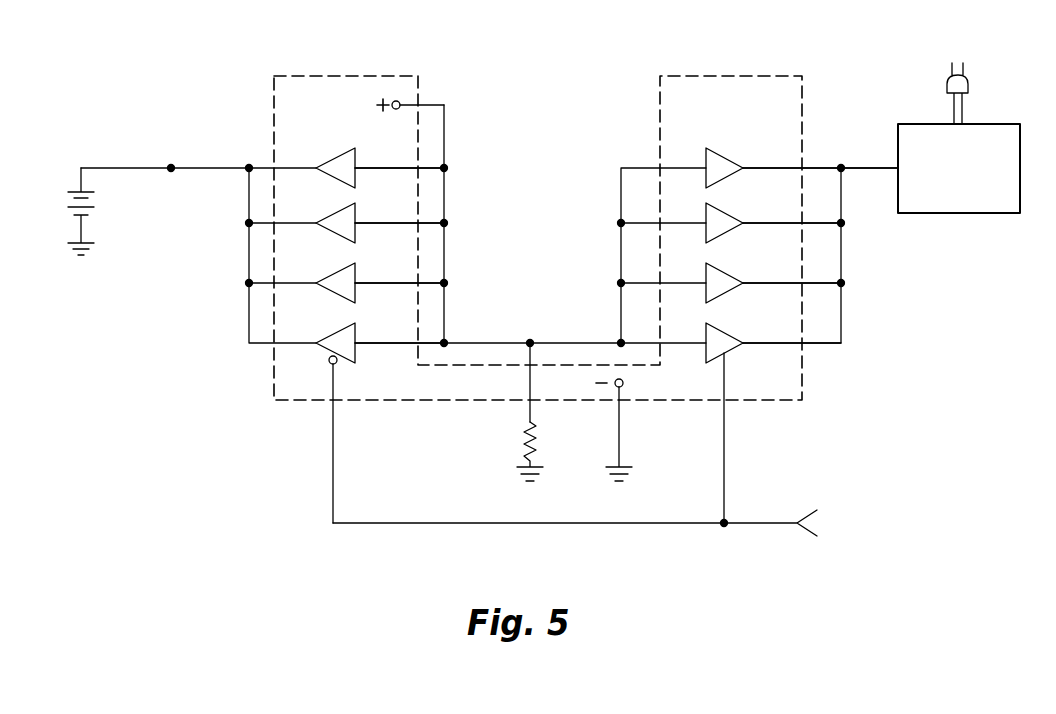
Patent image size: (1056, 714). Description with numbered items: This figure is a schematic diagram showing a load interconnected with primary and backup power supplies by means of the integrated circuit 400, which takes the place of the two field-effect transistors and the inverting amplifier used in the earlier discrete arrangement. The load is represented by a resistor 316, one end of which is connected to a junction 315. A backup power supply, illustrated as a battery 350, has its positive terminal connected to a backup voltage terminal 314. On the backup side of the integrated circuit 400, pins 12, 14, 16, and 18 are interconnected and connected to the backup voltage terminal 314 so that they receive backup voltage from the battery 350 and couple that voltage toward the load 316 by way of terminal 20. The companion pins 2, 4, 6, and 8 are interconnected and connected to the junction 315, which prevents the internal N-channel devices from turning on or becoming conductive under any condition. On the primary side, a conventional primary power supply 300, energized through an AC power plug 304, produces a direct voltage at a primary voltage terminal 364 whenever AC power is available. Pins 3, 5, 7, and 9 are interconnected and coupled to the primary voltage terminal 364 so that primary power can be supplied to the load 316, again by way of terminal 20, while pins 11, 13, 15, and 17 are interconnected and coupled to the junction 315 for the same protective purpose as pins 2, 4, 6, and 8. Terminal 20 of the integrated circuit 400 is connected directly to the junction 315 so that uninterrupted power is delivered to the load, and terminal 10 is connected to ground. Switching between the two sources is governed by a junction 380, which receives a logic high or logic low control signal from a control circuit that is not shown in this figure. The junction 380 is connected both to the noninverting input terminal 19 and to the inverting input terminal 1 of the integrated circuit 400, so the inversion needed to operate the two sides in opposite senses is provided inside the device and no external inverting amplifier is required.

The inverting input terminal 1 is at (327, 439).
The pin 2 is at (399, 156).
The pin 3 is at (792, 331).
The pin 4 is at (399, 211).
The pin 5 is at (792, 271).
The pin 6 is at (399, 271).
The pin 7 is at (792, 211).
The pin 8 is at (399, 331).
The pin 9 is at (792, 156).
The terminal 10 is at (624, 428).
The pin 11 is at (708, 166).
The pin 12 is at (322, 341).
The pin 13 is at (708, 221).
The pin 14 is at (322, 281).
The pin 15 is at (708, 281).
The pin 16 is at (322, 221).
The pin 17 is at (708, 341).
The pin 18 is at (322, 166).
The noninverting input terminal 19 is at (739, 438).
The terminal 20 is at (410, 94).
The primary power supply 300 is at (963, 213).
The AC power plug 304 is at (968, 88).
The backup voltage terminal 314 is at (171, 166).
The junction 315 is at (530, 341).
The resistor 316 is at (524, 450).
The battery 350 is at (97, 207).
The primary voltage terminal 364 is at (841, 166).
The junction 380 is at (724, 526).
The integrated circuit 400 is at (801, 400).